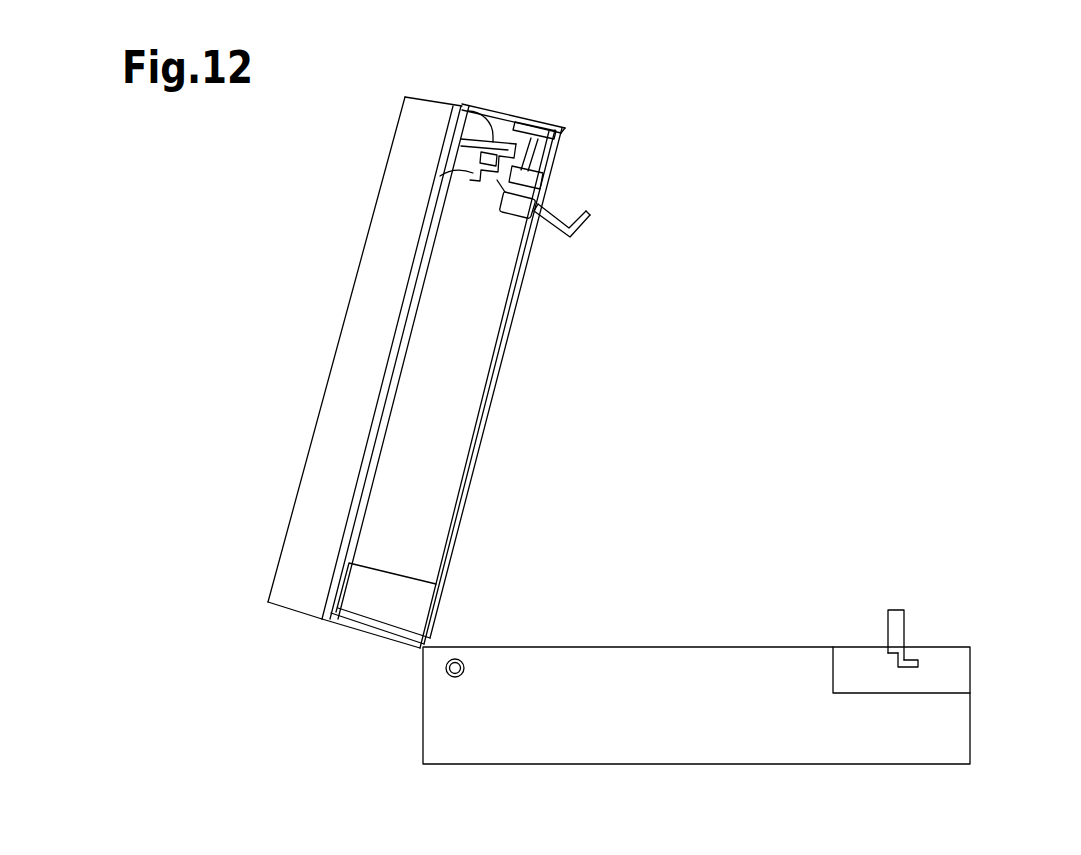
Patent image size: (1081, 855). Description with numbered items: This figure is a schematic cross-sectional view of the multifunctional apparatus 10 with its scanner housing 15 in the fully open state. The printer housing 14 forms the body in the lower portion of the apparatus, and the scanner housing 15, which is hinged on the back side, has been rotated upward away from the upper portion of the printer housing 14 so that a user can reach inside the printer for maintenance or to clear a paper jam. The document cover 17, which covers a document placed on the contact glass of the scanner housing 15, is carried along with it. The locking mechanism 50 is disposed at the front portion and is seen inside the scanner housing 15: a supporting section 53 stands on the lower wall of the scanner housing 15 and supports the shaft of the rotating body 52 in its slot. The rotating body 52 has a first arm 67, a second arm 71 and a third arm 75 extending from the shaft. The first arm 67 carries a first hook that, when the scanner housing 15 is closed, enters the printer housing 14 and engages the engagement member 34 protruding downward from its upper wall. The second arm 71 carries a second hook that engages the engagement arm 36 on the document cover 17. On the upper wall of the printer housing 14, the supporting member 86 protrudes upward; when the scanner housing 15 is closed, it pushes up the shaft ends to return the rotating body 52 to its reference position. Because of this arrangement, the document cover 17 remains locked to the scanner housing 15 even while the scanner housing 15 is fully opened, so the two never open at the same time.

The multifunctional apparatus 10 is at (415, 753).
The printer housing 14 is at (970, 730).
The scanner housing 15 is at (505, 106).
The document cover 17 is at (337, 343).
The engagement member 34 is at (918, 665).
The engagement arm 36 is at (468, 104).
The locking mechanism 50 is at (585, 114).
The rotating body 52 is at (493, 188).
The supporting section 53 is at (560, 154).
The first arm 67 is at (560, 236).
The second arm 71 is at (445, 188).
The third arm 75 is at (528, 165).
The supporting member 86 is at (888, 631).